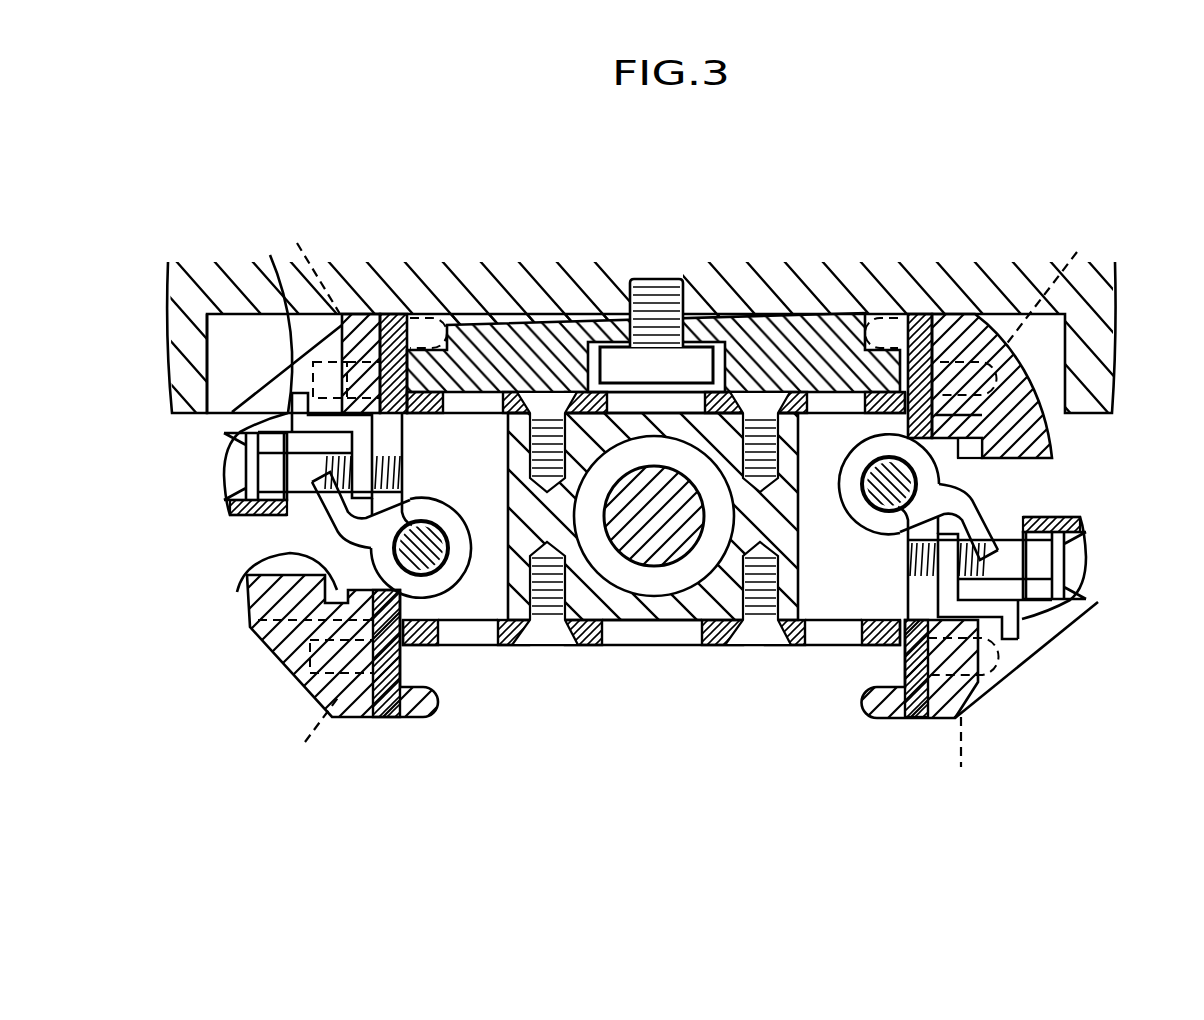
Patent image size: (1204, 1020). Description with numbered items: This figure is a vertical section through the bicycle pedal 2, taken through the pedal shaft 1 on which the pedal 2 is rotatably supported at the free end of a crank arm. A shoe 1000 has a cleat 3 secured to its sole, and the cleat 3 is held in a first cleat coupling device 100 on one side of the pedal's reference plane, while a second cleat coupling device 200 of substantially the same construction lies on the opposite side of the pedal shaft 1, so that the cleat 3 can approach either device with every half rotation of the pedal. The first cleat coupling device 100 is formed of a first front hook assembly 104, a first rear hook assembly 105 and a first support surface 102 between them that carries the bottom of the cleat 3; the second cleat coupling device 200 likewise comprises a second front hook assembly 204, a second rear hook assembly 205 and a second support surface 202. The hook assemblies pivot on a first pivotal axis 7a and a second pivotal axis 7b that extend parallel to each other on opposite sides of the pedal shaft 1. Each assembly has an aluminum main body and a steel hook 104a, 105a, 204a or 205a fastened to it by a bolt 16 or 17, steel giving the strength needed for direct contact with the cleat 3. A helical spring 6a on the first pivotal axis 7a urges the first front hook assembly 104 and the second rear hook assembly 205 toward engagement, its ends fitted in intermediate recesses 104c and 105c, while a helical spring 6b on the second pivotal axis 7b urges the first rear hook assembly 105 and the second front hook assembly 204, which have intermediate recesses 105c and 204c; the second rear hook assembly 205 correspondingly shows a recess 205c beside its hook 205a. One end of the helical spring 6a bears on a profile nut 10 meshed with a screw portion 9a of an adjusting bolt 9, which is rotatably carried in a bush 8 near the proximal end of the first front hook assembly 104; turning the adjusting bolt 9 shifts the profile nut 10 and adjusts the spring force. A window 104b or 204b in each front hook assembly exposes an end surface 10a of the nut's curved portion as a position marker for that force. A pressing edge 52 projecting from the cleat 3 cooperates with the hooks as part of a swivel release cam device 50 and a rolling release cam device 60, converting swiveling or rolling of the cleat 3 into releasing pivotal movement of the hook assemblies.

The pedal shaft 1 is at (659, 553).
The pedal 2 is at (720, 657).
The cleat 3 is at (773, 342).
The helical spring 6a is at (466, 562).
The helical spring 6b is at (881, 530).
The first pivotal axis 7a is at (428, 538).
The second pivotal axis 7b is at (880, 503).
The bush 8 is at (240, 424).
The adjusting bolt 9 is at (240, 473).
The screw portion 9a is at (388, 449).
The profile nut 10 is at (367, 423).
The end surface 10a is at (270, 255).
The bolt 16 is at (621, 503).
The bolt 17 is at (700, 489).
The swivel release cam device 50 is at (458, 312).
The rolling release cam device 60 is at (898, 310).
The pressing edge 52 is at (424, 316).
The first cleat coupling device 100 is at (683, 366).
The first support surface 102 is at (509, 390).
The first front hook assembly 104 is at (220, 508).
The hook 104a is at (391, 314).
The window 104b is at (262, 390).
The intermediate recess 104c is at (298, 512).
The first rear hook assembly 105 is at (1043, 438).
The hook 105a is at (920, 323).
The intermediate recess 105c is at (970, 455).
The second cleat coupling device 200 is at (496, 735).
The second support surface 202 is at (607, 653).
The second front hook assembly 204 is at (977, 707).
The hook 204a is at (905, 700).
The window 204b is at (1010, 670).
The intermediate recess 204c is at (1000, 520).
The second rear hook assembly 205 is at (280, 650).
The hook 205a is at (391, 720).
The lower left clamp notch 205c is at (237, 592).
The shoe 1000 is at (1100, 363).